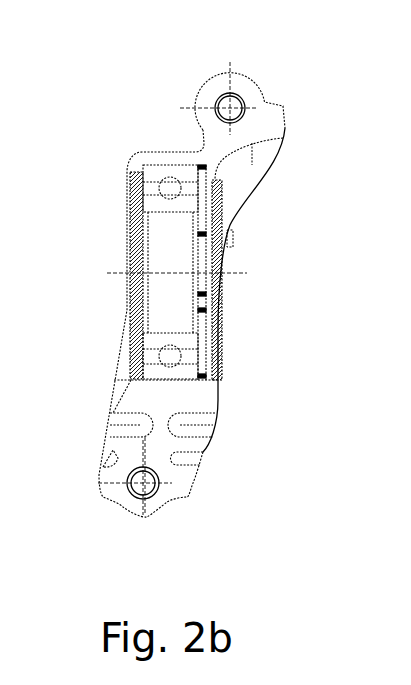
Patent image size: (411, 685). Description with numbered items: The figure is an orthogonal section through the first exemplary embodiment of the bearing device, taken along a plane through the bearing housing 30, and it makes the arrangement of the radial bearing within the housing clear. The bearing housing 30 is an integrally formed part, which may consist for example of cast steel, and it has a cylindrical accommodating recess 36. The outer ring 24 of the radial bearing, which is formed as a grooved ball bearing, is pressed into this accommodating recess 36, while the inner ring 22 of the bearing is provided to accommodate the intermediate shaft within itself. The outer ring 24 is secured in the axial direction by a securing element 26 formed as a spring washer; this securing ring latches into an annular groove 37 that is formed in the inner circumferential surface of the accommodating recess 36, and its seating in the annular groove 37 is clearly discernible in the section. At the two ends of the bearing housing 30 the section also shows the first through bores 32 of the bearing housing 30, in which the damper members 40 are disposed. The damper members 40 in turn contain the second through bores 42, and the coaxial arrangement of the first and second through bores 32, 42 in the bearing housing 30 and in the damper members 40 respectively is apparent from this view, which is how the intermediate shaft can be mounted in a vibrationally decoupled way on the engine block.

The inner ring 22 is at (153, 203).
The outer ring 24 is at (153, 177).
The securing element 26 is at (204, 168).
The bearing housing 30 is at (263, 133).
The first through bores 32 is at (216, 95).
The accommodating recess 36 is at (168, 165).
The annular groove 37 is at (200, 387).
The damper members 40 is at (235, 99).
The second through bores 42 is at (236, 110).